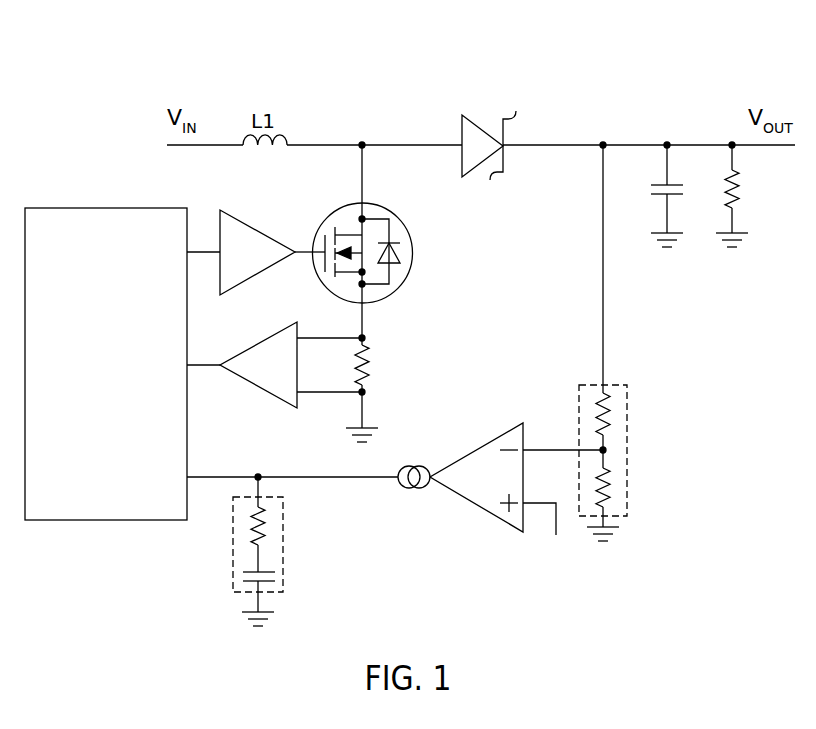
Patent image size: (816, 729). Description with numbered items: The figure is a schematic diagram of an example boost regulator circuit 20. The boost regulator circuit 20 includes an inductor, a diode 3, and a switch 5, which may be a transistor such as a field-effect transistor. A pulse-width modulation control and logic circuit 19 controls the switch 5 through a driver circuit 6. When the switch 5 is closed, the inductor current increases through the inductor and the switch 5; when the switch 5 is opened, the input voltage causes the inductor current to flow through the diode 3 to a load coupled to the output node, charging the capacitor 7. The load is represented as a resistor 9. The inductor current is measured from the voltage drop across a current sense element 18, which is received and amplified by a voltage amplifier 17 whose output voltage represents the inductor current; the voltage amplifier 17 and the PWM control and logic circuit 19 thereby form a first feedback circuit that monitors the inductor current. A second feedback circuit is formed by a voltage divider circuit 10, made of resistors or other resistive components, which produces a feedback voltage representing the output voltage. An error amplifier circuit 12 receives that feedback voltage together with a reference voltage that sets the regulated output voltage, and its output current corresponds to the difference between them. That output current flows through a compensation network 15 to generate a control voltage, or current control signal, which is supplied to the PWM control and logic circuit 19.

The boost regulator circuit 20 is at (728, 50).
The pulse-width modulation control and logic circuit 19 is at (107, 208).
The driver circuit 6 is at (259, 228).
The switch 5 is at (413, 254).
The diode 3 is at (479, 127).
The capacitor 7 is at (676, 194).
The resistor 9 is at (740, 196).
The voltage amplifier 17 is at (259, 338).
The current sense element 18 is at (367, 372).
The error amplifier circuit 12 is at (476, 448).
The voltage divider circuit 10 is at (627, 447).
The compensation network 15 is at (283, 543).